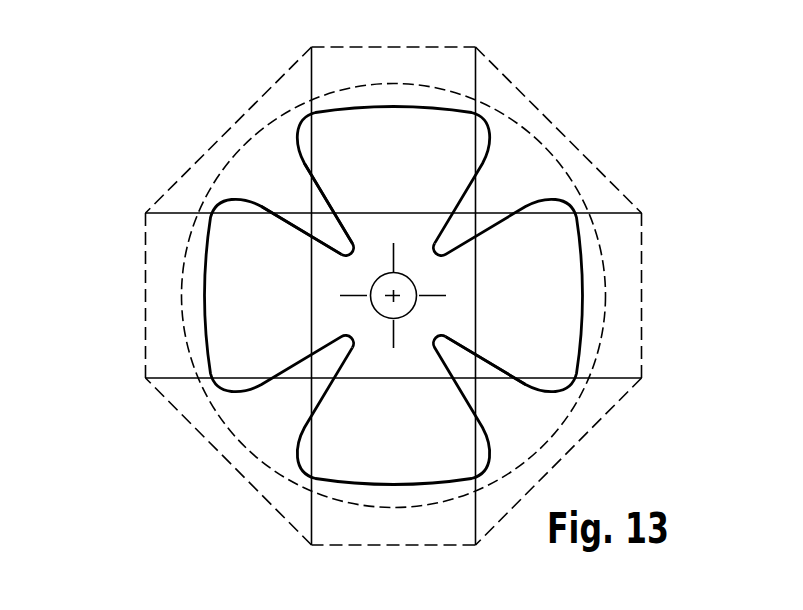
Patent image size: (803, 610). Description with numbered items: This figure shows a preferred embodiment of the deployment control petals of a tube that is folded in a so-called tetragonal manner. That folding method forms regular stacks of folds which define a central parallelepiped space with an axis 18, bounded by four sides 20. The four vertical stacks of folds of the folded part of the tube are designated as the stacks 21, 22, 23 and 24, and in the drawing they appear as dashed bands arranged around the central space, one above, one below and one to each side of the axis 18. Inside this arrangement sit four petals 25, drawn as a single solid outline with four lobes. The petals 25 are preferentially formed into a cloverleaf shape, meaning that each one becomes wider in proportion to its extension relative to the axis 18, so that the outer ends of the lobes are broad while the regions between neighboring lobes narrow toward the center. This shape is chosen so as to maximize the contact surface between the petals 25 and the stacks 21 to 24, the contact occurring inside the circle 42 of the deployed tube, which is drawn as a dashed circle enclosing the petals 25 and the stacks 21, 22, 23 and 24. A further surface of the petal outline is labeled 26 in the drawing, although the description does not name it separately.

The axis 18 is at (393, 296).
The sides 20 is at (312, 196).
The vertical stack of folds 21 is at (592, 272).
The vertical stack of folds 22 is at (362, 490).
The vertical stack of folds 23 is at (202, 242).
The vertical stack of folds 24 is at (397, 100).
The petals 25 is at (489, 140).
The flank surface 26 is at (466, 322).
The circle 42 is at (548, 438).